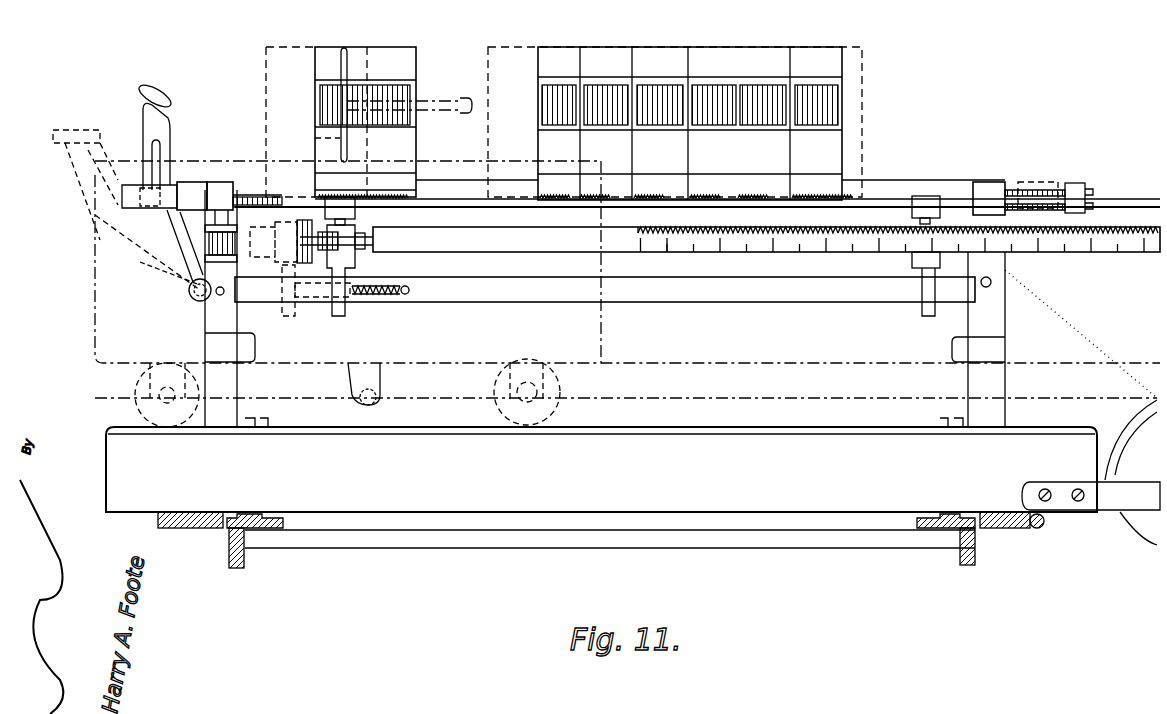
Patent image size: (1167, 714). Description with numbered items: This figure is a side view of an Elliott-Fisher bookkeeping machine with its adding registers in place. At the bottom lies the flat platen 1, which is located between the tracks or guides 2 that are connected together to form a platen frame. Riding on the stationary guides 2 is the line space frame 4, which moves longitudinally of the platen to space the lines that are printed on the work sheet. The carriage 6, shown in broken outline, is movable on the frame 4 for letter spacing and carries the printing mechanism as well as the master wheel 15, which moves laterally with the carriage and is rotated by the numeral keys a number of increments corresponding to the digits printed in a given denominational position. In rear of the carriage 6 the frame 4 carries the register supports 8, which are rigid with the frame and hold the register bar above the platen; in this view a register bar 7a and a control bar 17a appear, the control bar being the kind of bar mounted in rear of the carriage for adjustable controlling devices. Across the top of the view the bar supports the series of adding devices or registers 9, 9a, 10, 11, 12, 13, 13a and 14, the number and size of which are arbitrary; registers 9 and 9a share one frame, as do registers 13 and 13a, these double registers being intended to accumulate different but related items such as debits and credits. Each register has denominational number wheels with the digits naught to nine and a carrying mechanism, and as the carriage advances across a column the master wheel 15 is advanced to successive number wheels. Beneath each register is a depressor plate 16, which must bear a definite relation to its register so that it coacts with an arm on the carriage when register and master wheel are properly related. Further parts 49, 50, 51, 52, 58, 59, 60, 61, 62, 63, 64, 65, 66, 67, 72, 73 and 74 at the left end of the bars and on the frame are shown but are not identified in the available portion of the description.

The flat platen 1 is at (405, 538).
The tracks or guides 2 is at (262, 516).
The line space frame 4 is at (766, 435).
The carriage 6 is at (95, 320).
The slide plate 7a is at (450, 185).
The register supports 8 is at (205, 321).
The register 9 is at (315, 72).
The register 9a is at (416, 70).
The register 10 is at (554, 52).
The register 11 is at (603, 52).
The register 12 is at (653, 52).
The register 13 is at (707, 52).
The register 13a is at (765, 52).
The register 14 is at (812, 52).
The master wheel 15 is at (315, 142).
The depressor plate 16 is at (358, 192).
The graduated rack bar 17a is at (528, 248).
The screw bolt 49 is at (250, 195).
The end block 50 is at (218, 182).
The screw head 51 is at (1075, 182).
The clamp block 52 is at (188, 182).
The lever arm 58 is at (170, 238).
The handle knob 59 is at (170, 104).
The pivot 60 is at (189, 295).
The lower bar 61 is at (477, 292).
The link 62 is at (175, 264).
The handle rod 63 is at (152, 145).
The dashed lever 64 is at (160, 232).
The cylinder 65 is at (150, 188).
The clamp stem 66 is at (357, 262).
The clamp cap 67 is at (348, 225).
The threaded sleeve 72 is at (330, 250).
The gear wheel 73 is at (297, 258).
The adjusting screw 74 is at (372, 245).